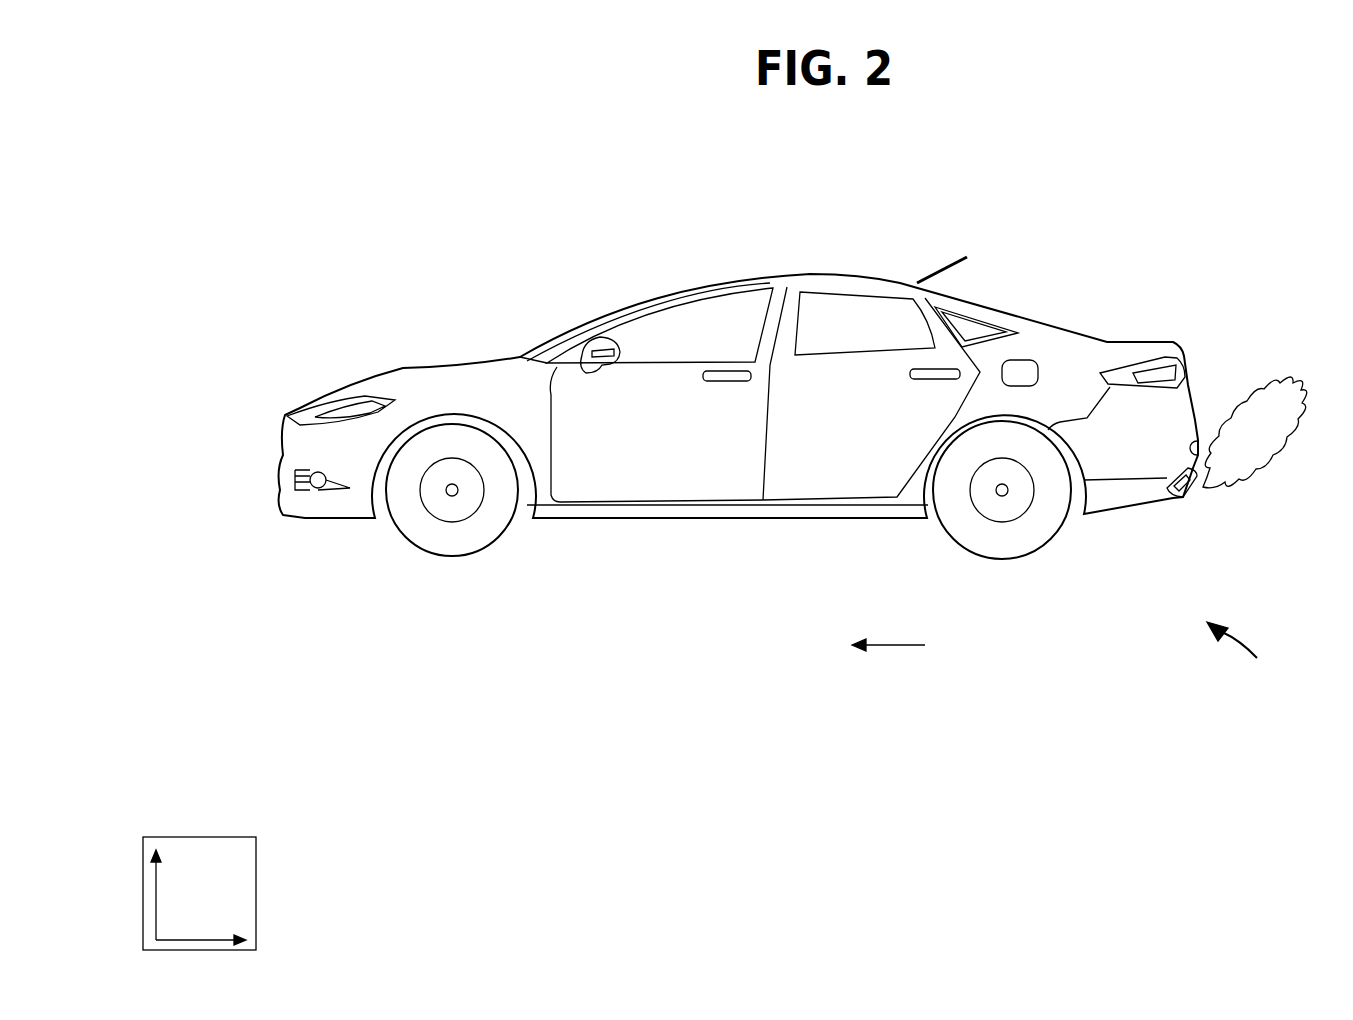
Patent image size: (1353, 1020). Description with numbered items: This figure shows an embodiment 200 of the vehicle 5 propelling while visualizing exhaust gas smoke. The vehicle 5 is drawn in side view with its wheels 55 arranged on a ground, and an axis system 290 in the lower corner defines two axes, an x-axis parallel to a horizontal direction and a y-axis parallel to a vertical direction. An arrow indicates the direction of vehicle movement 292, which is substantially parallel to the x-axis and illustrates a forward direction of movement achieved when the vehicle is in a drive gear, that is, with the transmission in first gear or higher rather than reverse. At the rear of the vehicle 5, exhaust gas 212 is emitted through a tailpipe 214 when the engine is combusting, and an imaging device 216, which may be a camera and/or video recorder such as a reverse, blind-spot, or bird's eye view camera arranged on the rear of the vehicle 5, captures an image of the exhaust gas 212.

The embodiment of the vehicle 200 is at (1237, 111).
The wheels 55 is at (470, 553).
The exhaust gas 212 is at (1273, 382).
The tailpipe 214 is at (1193, 494).
The imaging device 216 is at (1190, 448).
The direction of vehicle movement 292 is at (898, 645).
The vehicle 5 is at (1244, 649).
The axis system 290 is at (238, 837).